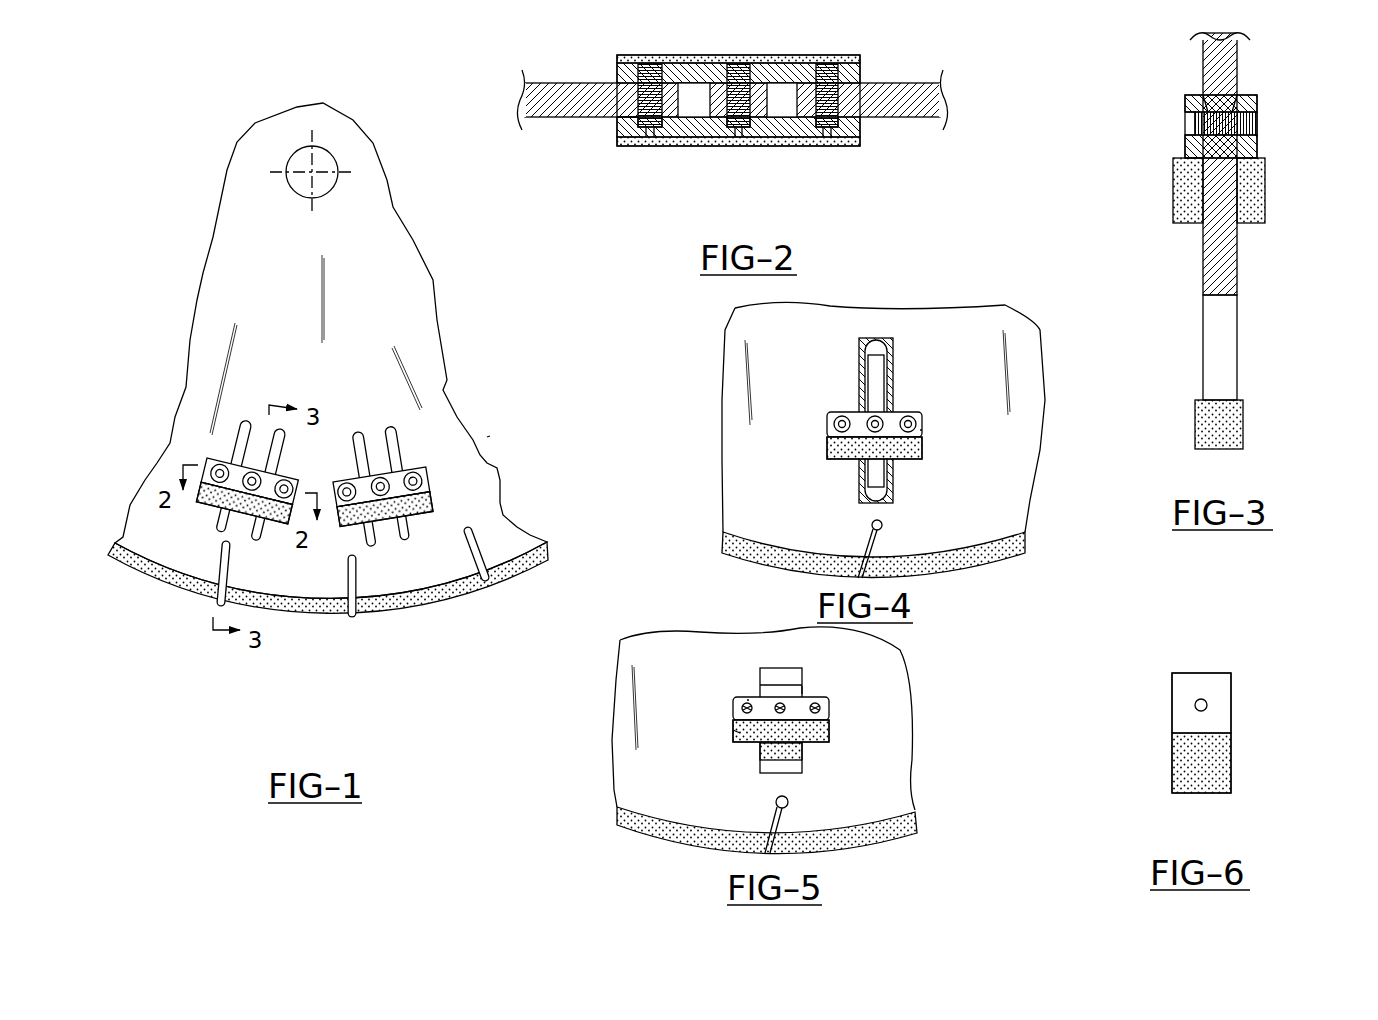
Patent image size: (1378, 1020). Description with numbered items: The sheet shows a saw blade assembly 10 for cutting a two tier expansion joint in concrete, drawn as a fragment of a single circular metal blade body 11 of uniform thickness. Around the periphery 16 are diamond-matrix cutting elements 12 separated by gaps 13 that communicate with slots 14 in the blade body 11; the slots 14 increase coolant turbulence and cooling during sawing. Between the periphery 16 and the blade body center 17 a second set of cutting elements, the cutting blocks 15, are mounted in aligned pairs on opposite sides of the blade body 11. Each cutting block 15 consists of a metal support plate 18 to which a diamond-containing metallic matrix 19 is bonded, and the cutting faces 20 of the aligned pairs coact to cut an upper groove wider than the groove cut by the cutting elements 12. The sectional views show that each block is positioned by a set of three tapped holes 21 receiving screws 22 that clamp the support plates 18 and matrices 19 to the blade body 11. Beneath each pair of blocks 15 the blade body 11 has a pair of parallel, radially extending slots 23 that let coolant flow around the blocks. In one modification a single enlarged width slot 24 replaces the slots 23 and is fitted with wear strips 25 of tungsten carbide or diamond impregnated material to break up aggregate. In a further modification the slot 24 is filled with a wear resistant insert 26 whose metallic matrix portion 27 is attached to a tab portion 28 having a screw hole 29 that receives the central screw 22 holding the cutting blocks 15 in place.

In FIG. 1, the saw blade assembly 10 is at (488, 436).
In FIG. 1, the blade body 11 is at (480, 493).
In FIG. 2, the blade body 11 is at (913, 107).
In FIG. 3, the blade body 11 is at (1240, 280).
In FIG. 4, the blade body 11 is at (915, 536).
In FIG. 5, the blade body 11 is at (820, 816).
In FIG. 1, the cutting elements 12 is at (318, 613).
In FIG. 3, the cutting elements 12 is at (1235, 427).
In FIG. 1, the gaps 13 is at (352, 615).
In FIG. 1, the slots 14 is at (480, 540).
In FIG. 3, the slots 14 is at (1230, 375).
In FIG. 1, the cutting blocks 15 is at (322, 472).
In FIG. 2, the cutting blocks 15 is at (612, 45).
In FIG. 3, the cutting blocks 15 is at (1180, 150).
In FIG. 1, the periphery 16 is at (280, 588).
In FIG. 1, the blade body center 17 is at (305, 170).
In FIG. 1, the support plate 18 is at (405, 480).
In FIG. 2, the support plate 18 is at (858, 73).
In FIG. 3, the support plate 18 is at (1185, 100).
In FIG. 4, the support plate 18 is at (920, 430).
In FIG. 5, the support plate 18 is at (748, 700).
In FIG. 1, the metallic matrix 19 is at (244, 503).
In FIG. 2, the metallic matrix 19 is at (830, 55).
In FIG. 3, the metallic matrix 19 is at (1178, 192).
In FIG. 4, the metallic matrix 19 is at (845, 455).
In FIG. 5, the metallic matrix 19 is at (742, 743).
In FIG. 1, the cutting faces 20 is at (241, 521).
In FIG. 5, the cutting faces 20 is at (740, 733).
In FIG. 2, the tapped holes 21 is at (676, 135).
In FIG. 3, the tapped holes 21 is at (1232, 100).
In FIG. 1, the screws 22 is at (249, 481).
In FIG. 2, the screws 22 is at (645, 105).
In FIG. 3, the screws 22 is at (1208, 95).
In FIG. 4, the screws 22 is at (830, 425).
In FIG. 5, the screws 22 is at (745, 700).
In FIG. 1, the slots 23 is at (257, 451).
In FIG. 2, the slots 23 is at (692, 97).
In FIG. 4, the enlarged width slot 24 is at (860, 375).
In FIG. 5, the enlarged width slot 24 is at (802, 690).
In FIG. 4, the wear strips 25 is at (885, 392).
In FIG. 5, the insert block 26 is at (809, 730).
In FIG. 6, the insert block 26 is at (1193, 708).
In FIG. 5, the metallic matrix portion 27 is at (765, 752).
In FIG. 6, the metallic matrix portion 27 is at (1185, 758).
In FIG. 5, the tab portion 28 is at (790, 683).
In FIG. 6, the tab portion 28 is at (1212, 685).
In FIG. 6, the screw hole 29 is at (1208, 708).